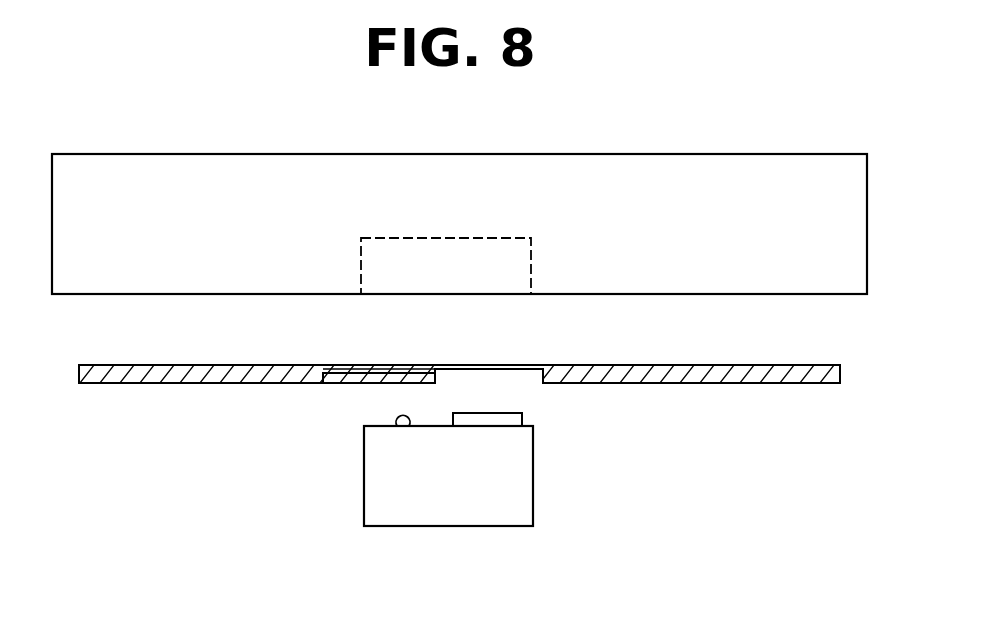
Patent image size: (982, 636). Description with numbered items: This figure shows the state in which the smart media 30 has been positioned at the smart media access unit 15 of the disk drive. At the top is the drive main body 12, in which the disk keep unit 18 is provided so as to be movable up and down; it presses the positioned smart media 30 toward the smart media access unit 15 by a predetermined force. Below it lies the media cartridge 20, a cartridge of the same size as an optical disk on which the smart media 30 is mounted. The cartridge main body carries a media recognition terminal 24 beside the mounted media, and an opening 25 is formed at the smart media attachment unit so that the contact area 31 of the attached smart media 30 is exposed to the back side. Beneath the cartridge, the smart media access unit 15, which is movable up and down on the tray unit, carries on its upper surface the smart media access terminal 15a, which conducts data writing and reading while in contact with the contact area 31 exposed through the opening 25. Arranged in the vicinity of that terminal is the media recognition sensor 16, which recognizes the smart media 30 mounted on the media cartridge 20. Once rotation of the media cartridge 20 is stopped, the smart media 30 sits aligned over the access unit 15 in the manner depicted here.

The drive main body 12 is at (485, 155).
The disk keep unit 18 is at (390, 248).
The media cartridge 20 is at (158, 375).
The media recognition terminal 24 is at (398, 383).
The opening 25 is at (472, 378).
The smart media 30 is at (487, 366).
The contact area 31 is at (513, 377).
The smart media access unit 15 is at (533, 508).
The smart media access terminal 15a is at (497, 420).
The media recognition sensor 16 is at (403, 427).